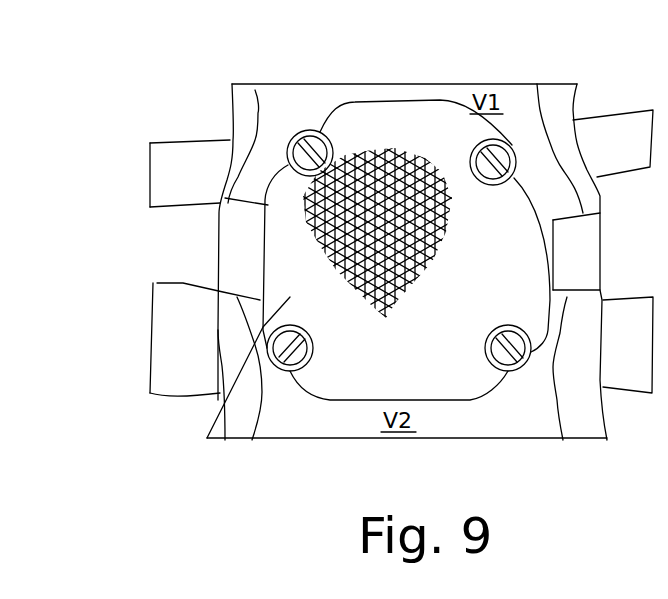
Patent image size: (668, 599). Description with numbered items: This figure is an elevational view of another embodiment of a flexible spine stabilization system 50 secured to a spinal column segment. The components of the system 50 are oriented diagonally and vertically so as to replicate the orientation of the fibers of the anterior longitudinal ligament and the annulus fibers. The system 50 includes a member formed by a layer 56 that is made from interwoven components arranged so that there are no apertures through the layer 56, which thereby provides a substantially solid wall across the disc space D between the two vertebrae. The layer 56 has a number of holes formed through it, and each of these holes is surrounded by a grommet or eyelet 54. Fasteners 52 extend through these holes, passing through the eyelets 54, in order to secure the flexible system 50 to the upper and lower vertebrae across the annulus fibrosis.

The disc space D is at (208, 236).
The spine stabilization system 50 is at (403, 102).
The fasteners 52 is at (292, 138).
The grommets or eyelets 54 is at (326, 132).
The layer 56 is at (223, 410).